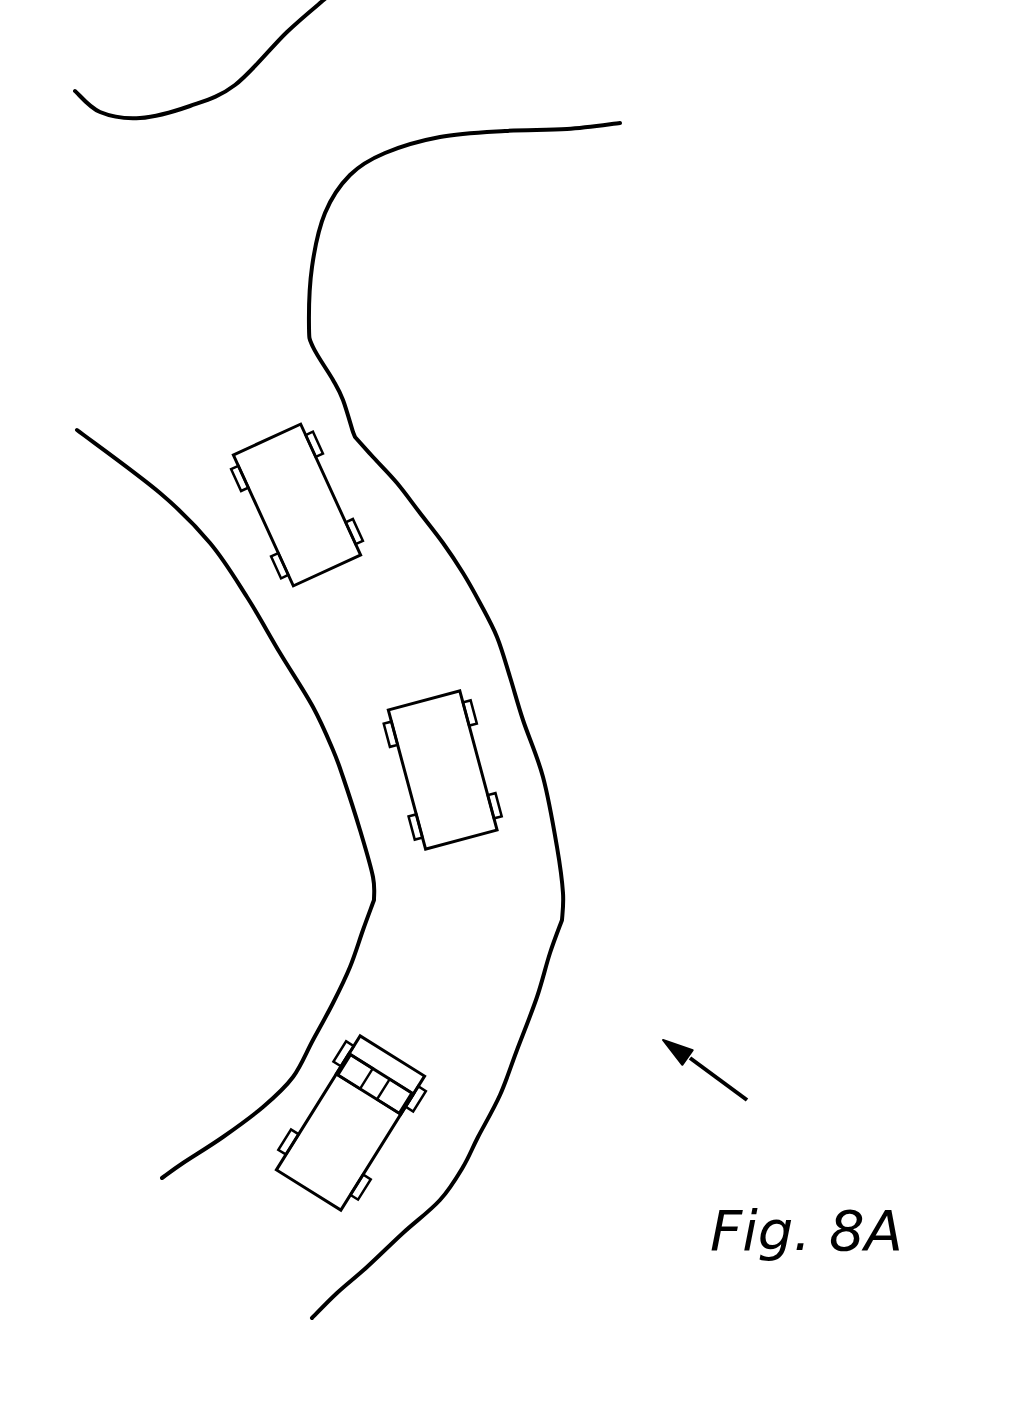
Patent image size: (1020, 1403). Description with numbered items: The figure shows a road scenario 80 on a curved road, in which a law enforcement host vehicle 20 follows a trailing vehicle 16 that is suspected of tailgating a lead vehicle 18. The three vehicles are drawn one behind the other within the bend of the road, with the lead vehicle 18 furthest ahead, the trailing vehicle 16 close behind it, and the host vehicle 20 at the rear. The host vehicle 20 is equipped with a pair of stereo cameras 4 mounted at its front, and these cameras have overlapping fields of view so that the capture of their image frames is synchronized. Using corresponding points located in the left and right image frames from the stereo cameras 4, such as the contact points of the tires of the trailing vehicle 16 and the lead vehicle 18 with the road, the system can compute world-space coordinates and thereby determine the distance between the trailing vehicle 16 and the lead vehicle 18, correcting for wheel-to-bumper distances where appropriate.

The lead vehicle 18 is at (297, 505).
The trailing vehicle 16 is at (443, 770).
The law enforcement host vehicle 20 is at (350, 1123).
The stereo cameras 4 is at (375, 1084).
The road scenario 80 is at (723, 1086).